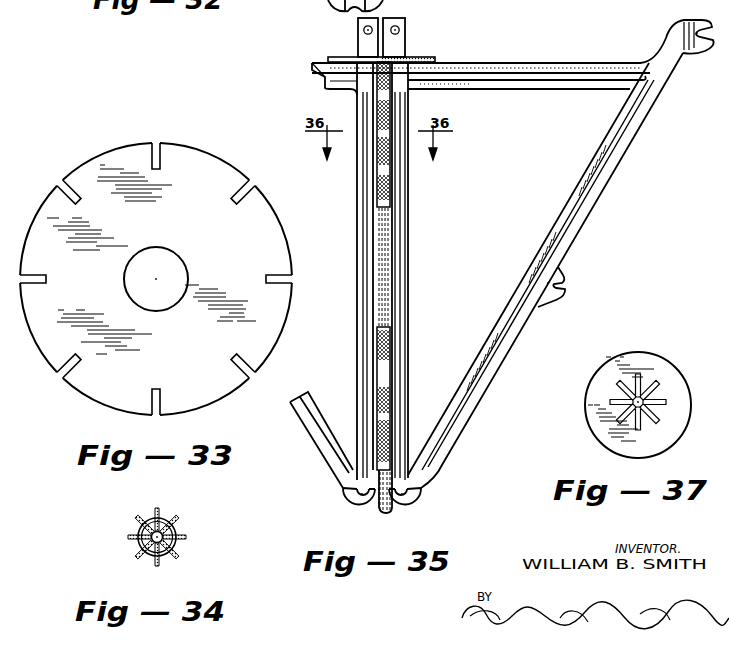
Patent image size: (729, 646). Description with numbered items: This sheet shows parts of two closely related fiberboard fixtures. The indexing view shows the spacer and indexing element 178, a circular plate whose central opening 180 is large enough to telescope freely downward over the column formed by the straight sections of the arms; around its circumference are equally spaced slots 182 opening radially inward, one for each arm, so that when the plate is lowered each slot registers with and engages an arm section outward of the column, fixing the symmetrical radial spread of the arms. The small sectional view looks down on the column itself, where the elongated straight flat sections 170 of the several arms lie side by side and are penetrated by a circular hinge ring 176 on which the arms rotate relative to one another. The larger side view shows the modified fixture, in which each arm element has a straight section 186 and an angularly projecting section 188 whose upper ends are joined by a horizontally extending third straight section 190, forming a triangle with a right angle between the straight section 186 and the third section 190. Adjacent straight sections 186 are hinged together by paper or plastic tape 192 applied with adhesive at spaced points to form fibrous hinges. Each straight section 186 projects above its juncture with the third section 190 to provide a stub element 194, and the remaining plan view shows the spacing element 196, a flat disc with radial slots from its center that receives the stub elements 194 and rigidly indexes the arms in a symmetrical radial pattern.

In FIG. 33, the spacer and indexing element 178 is at (178, 172).
In FIG. 33, the central opening 180 is at (172, 278).
In FIG. 33, the slots 182 is at (252, 193).
In FIG. 34, the elongated straight flat section 170 is at (177, 532).
In FIG. 34, the circular hinge rings 176 is at (165, 519).
In FIG. 35, the straight sections 186 is at (402, 253).
In FIG. 35, the angularly projecting sections 188 is at (568, 239).
In FIG. 35, the third straight section 190 is at (541, 82).
In FIG. 35, the paper or plastic tape 192 is at (390, 197).
In FIG. 35, the stub element 194 is at (403, 42).
In FIG. 35, the spacing element 196 is at (338, 57).
In FIG. 37, the spacing element 196 is at (659, 378).